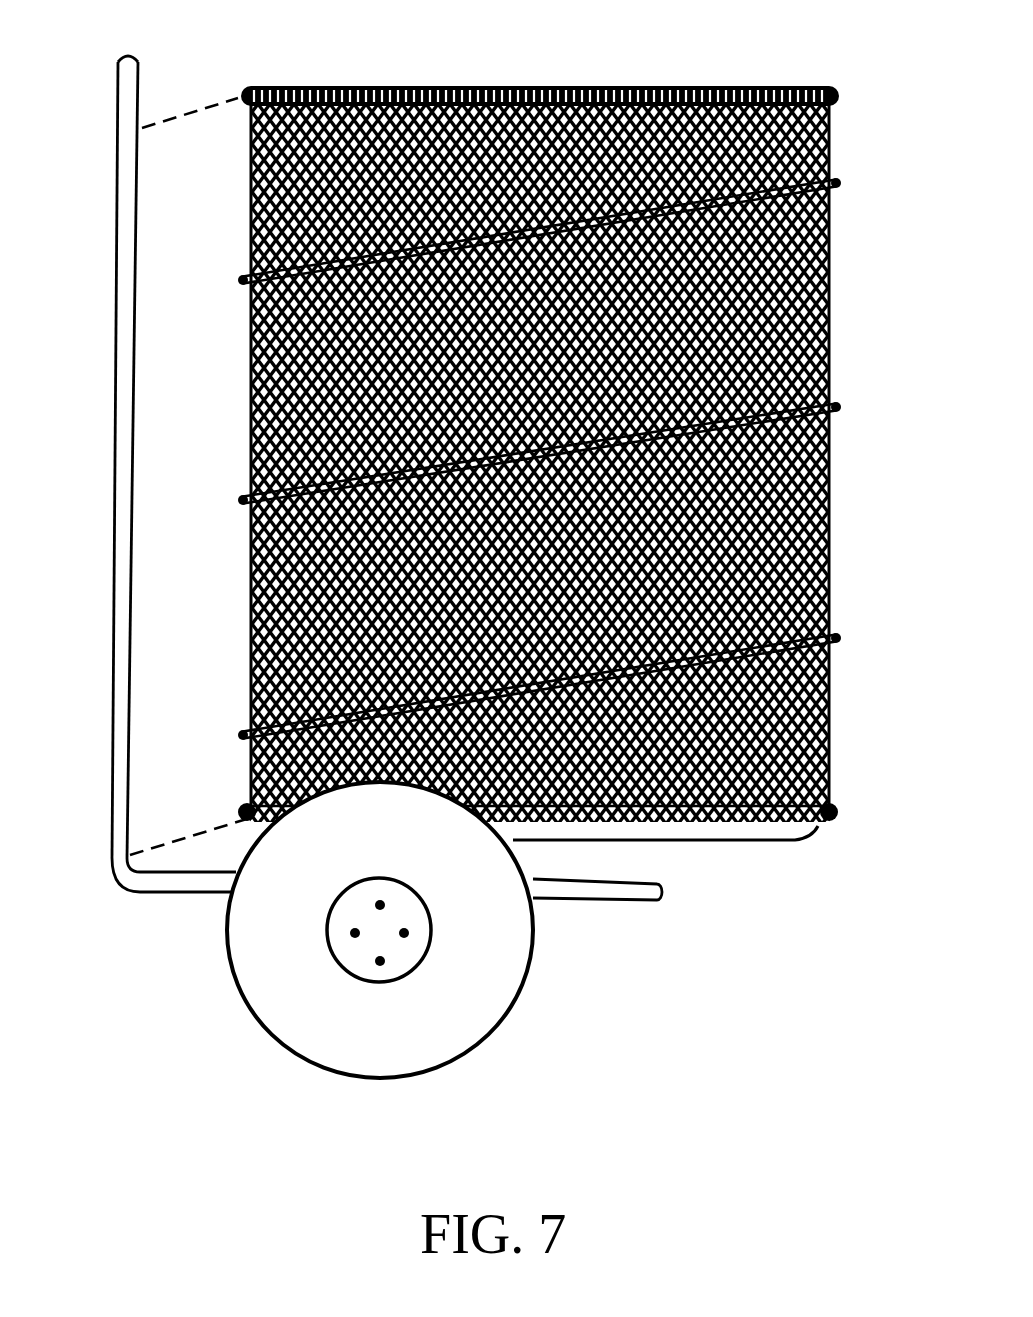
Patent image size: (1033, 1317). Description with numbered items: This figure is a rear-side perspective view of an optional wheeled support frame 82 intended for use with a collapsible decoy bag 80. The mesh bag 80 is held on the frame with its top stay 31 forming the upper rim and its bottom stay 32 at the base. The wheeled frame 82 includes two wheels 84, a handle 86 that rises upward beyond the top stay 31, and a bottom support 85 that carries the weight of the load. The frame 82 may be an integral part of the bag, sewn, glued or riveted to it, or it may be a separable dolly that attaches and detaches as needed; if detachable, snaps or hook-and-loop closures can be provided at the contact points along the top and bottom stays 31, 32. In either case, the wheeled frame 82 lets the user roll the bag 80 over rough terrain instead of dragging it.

The top stay 31 is at (845, 96).
The bottom stay 32 is at (768, 845).
The bag 80 is at (832, 316).
The wheeled support frame 82 is at (98, 576).
The wheels 84 is at (523, 990).
The bottom support 85 is at (663, 900).
The handle 86 is at (115, 68).